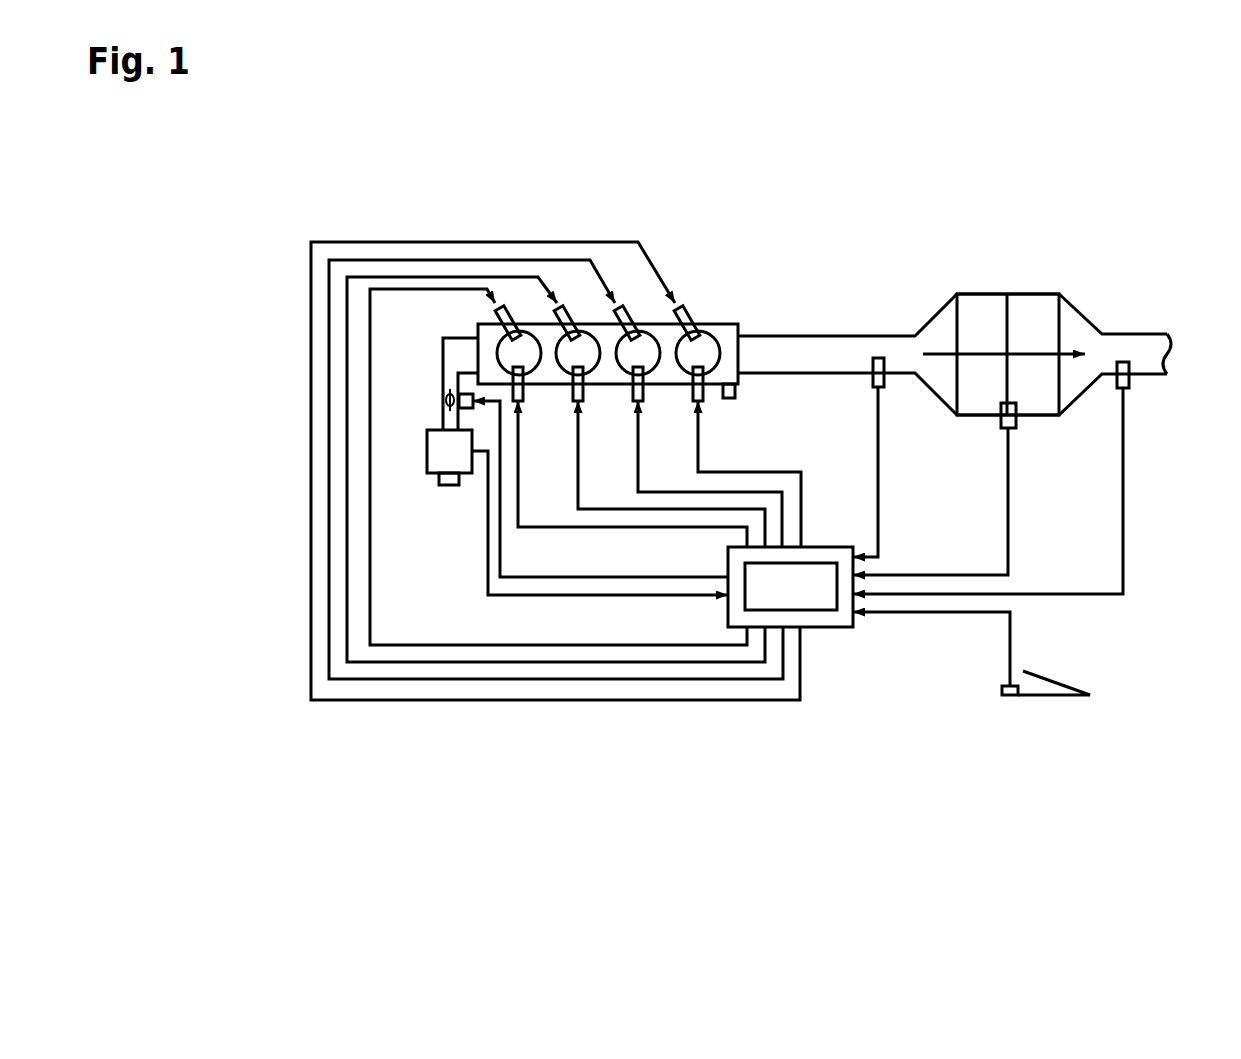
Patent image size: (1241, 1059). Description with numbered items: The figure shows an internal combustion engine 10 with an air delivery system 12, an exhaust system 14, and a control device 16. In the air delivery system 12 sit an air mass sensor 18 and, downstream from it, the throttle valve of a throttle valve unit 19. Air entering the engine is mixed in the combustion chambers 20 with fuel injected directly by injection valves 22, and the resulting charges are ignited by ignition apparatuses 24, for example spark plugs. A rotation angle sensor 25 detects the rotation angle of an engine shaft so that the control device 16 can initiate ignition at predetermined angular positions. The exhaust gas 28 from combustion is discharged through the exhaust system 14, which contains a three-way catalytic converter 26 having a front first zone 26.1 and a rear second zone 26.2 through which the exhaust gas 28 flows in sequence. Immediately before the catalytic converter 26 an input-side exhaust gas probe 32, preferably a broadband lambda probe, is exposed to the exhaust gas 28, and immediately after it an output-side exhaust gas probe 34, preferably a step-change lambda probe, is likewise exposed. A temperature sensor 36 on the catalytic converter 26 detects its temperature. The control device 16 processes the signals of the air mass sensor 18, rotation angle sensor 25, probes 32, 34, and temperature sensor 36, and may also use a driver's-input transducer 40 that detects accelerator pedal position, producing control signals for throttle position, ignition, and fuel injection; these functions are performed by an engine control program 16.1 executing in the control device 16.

The internal combustion engine 10 is at (778, 210).
The air delivery system 12 is at (448, 487).
The exhaust system 14 is at (1188, 442).
The control device 16 is at (845, 627).
The engine control program 16.1 is at (820, 610).
The air mass sensor 18 is at (427, 450).
The throttle valve unit 19 is at (460, 394).
The combustion chambers 20 is at (720, 326).
The injection valves 22 is at (692, 400).
The ignition apparatuses 24 is at (688, 308).
The rotation angle sensor 25 is at (738, 385).
The catalytic converter 26 is at (943, 417).
The first zone 26.1 is at (975, 300).
The second zone 26.2 is at (1045, 300).
The exhaust gas 28 is at (1030, 350).
The input-side exhaust gas probe 32 is at (873, 375).
The output-side exhaust gas probe 34 is at (1129, 385).
The temperature sensor 36 is at (1016, 423).
The driver's-input transducer 40 is at (1010, 697).